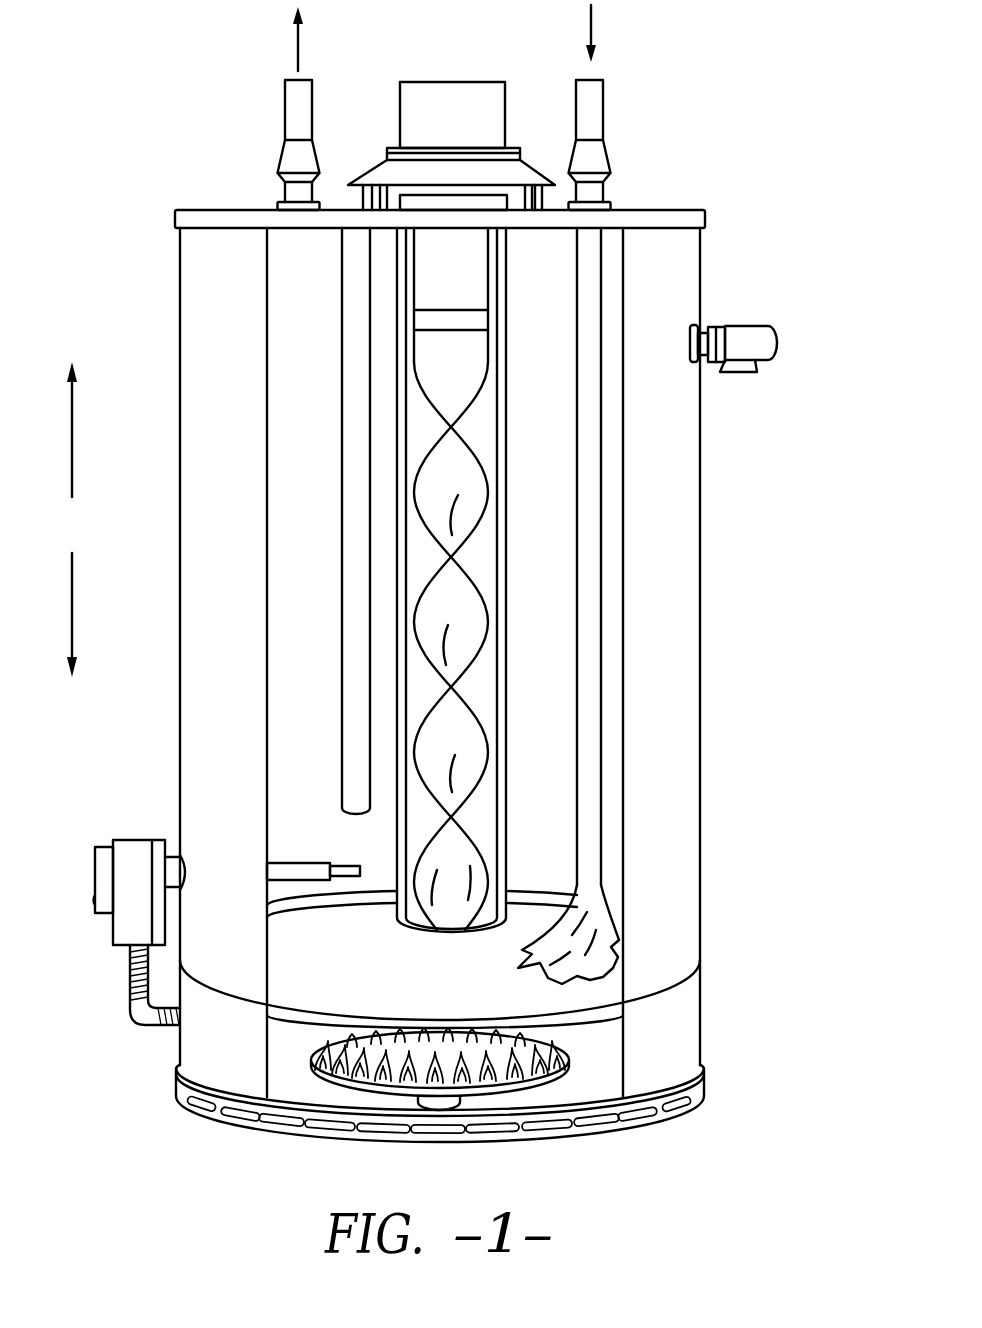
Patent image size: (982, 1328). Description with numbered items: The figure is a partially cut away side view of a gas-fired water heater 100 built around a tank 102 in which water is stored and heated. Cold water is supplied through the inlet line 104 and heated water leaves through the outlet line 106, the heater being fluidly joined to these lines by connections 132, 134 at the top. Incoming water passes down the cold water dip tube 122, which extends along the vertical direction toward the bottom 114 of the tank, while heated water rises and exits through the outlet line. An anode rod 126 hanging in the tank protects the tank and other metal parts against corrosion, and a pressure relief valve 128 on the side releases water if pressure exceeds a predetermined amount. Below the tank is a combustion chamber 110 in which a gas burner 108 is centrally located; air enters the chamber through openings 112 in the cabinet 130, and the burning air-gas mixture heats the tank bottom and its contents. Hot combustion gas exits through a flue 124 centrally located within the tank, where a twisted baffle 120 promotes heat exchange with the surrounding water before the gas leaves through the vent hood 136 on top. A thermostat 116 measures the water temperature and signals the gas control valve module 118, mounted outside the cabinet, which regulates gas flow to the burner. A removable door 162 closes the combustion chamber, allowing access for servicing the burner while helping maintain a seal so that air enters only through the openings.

The water heater 100 is at (160, 114).
The tank 102 is at (543, 275).
The inlet line 104 is at (593, 107).
The outlet line 106 is at (293, 107).
The gas burner 108 is at (528, 1072).
The combustion chamber 110 is at (588, 1068).
The openings 112 is at (200, 1105).
The bottom 114 is at (453, 990).
The thermostat 116 is at (342, 872).
The gas control valve module 118 is at (138, 840).
The baffle 120 is at (465, 483).
The cold water dip tube 122 is at (588, 627).
The flue 124 is at (505, 410).
The anode rod 126 is at (355, 458).
The pressure relief valve 128 is at (752, 332).
The cabinet 130 is at (677, 762).
The connection 132 is at (278, 203).
The connection 134 is at (608, 203).
The vent hood 136 is at (445, 93).
The door 162 is at (377, 1068).